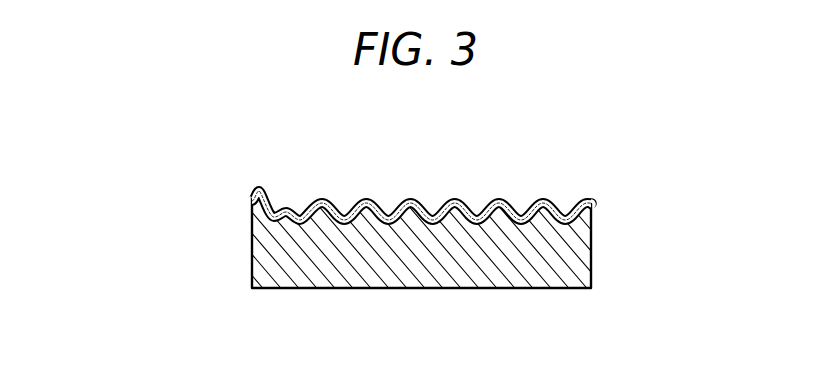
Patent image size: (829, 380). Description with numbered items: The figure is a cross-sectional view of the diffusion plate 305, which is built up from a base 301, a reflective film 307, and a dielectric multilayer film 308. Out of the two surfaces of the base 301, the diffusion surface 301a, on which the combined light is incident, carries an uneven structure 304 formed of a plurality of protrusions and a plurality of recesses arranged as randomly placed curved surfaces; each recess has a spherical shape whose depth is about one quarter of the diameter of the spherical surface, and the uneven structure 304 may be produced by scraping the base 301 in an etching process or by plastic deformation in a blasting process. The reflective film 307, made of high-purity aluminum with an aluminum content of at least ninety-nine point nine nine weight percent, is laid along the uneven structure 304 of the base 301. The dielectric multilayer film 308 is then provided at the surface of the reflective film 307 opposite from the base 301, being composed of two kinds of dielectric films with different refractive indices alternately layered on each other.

The diffusion plate 305 is at (232, 236).
The base 301 is at (575, 268).
The diffusion surface 301a is at (298, 216).
The uneven structure 304 is at (390, 197).
The dielectric multilayer film 308 is at (495, 202).
The reflective film 307 is at (562, 216).